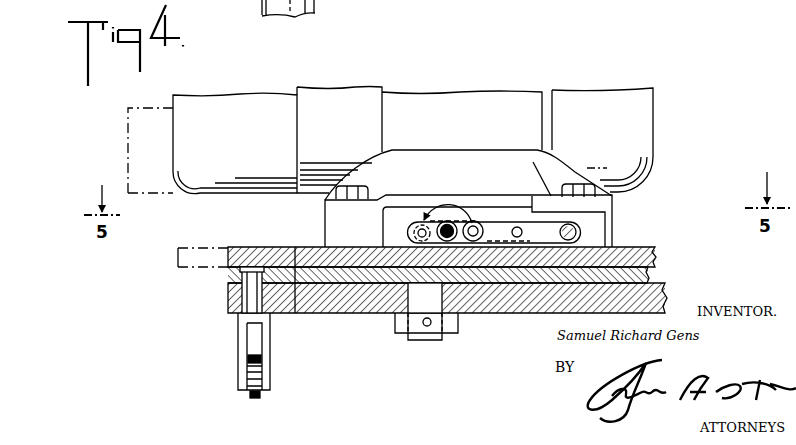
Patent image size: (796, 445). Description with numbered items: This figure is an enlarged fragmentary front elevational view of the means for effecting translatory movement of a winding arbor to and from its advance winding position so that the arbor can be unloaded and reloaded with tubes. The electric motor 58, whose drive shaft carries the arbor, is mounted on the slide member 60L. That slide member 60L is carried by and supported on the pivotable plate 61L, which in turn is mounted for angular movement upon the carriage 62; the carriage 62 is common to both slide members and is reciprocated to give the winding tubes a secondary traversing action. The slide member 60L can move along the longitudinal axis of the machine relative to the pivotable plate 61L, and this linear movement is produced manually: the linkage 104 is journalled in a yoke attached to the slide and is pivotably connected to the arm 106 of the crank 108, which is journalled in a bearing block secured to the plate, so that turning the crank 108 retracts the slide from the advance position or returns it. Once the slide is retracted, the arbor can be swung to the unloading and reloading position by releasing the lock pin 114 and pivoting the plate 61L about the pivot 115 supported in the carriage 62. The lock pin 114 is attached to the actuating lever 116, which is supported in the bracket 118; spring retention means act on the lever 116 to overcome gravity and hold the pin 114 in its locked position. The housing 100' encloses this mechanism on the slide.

The electric motor 58 is at (420, 108).
The cover housing 100' is at (495, 198).
The linkage 104 is at (528, 220).
The arm 106 is at (461, 221).
The crank 108 is at (447, 225).
The slide member 60L is at (652, 249).
The pivotable plate 61L is at (649, 270).
The carriage 62 is at (666, 291).
The lock pin 114 is at (252, 295).
The pivot 115 is at (433, 336).
The actuating lever 116 is at (250, 398).
The bracket 118 is at (240, 375).